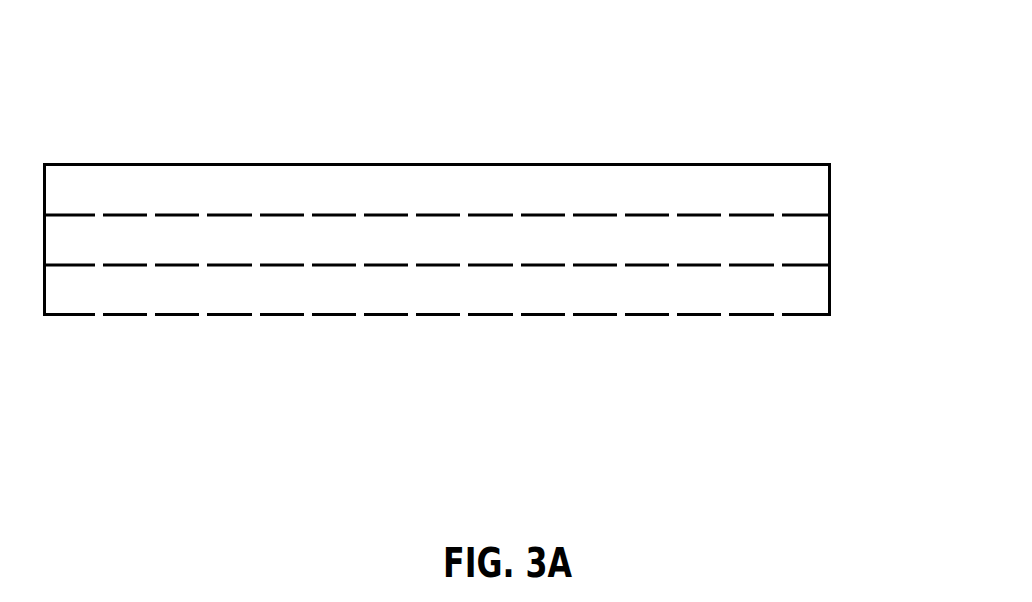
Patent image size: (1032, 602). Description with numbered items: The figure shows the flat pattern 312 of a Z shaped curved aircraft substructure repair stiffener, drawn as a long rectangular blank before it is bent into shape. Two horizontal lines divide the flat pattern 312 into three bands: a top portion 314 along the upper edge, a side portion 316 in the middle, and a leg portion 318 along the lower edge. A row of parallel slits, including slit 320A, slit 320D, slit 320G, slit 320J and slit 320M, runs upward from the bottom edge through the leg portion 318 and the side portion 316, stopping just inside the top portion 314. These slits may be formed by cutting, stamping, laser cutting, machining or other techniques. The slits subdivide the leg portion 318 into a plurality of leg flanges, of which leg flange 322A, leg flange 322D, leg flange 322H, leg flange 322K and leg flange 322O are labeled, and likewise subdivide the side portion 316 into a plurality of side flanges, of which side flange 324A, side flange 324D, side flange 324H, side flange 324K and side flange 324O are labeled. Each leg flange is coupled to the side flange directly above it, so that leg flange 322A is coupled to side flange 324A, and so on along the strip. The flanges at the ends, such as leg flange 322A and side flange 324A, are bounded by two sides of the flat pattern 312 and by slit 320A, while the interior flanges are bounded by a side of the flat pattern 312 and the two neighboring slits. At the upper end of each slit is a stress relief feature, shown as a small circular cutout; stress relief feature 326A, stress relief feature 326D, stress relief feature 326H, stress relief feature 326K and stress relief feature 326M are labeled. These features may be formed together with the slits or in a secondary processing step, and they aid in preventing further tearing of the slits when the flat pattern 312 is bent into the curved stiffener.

The flat pattern 312 is at (190, 63).
The top portion 314 is at (834, 188).
The side portion 316 is at (834, 240).
The leg portion 318 is at (834, 282).
The slit 320A is at (103, 320).
The slit 320D is at (260, 320).
The slit 320G is at (416, 320).
The slit 320J is at (574, 320).
The slit 320M is at (724, 320).
The leg flange 322A is at (69, 300).
The leg flange 322D is at (226, 300).
The leg flange 322H is at (444, 300).
The leg flange 322K is at (601, 285).
The leg flange 322O is at (808, 300).
The side flange 324A is at (66, 226).
The side flange 324D is at (226, 242).
The side flange 324H is at (434, 242).
The side flange 324K is at (592, 242).
The side flange 324O is at (808, 242).
The stress relief feature 326A is at (101, 199).
The stress relief feature 326D is at (258, 199).
The stress relief feature 326H is at (467, 199).
The stress relief feature 326K is at (622, 199).
The stress relief feature 326M is at (731, 199).